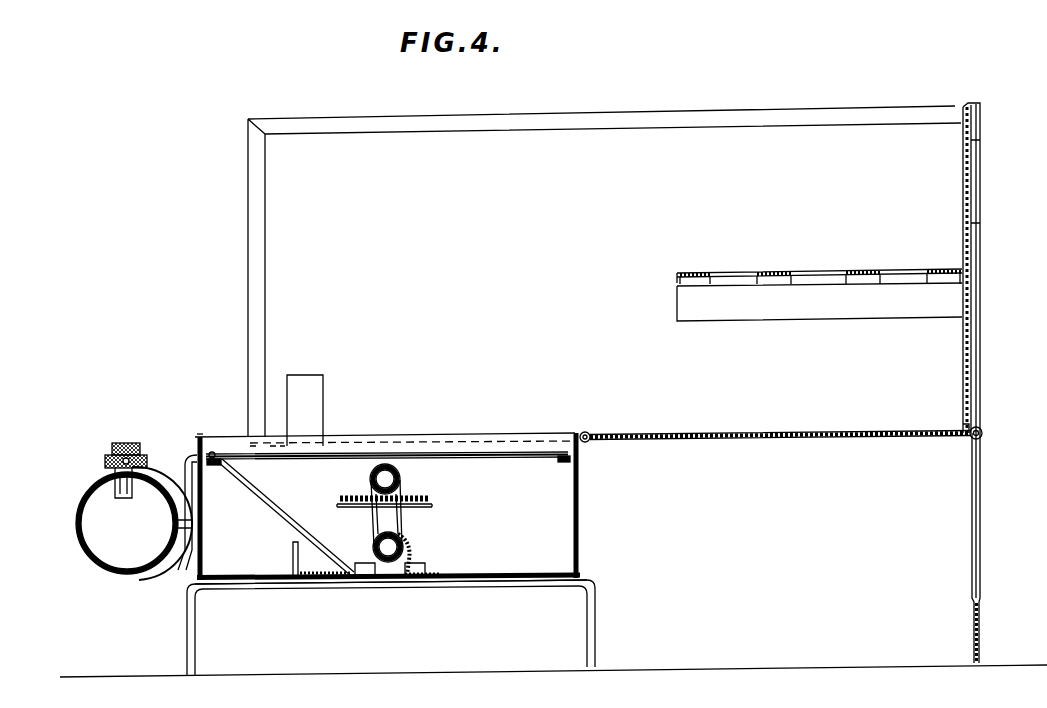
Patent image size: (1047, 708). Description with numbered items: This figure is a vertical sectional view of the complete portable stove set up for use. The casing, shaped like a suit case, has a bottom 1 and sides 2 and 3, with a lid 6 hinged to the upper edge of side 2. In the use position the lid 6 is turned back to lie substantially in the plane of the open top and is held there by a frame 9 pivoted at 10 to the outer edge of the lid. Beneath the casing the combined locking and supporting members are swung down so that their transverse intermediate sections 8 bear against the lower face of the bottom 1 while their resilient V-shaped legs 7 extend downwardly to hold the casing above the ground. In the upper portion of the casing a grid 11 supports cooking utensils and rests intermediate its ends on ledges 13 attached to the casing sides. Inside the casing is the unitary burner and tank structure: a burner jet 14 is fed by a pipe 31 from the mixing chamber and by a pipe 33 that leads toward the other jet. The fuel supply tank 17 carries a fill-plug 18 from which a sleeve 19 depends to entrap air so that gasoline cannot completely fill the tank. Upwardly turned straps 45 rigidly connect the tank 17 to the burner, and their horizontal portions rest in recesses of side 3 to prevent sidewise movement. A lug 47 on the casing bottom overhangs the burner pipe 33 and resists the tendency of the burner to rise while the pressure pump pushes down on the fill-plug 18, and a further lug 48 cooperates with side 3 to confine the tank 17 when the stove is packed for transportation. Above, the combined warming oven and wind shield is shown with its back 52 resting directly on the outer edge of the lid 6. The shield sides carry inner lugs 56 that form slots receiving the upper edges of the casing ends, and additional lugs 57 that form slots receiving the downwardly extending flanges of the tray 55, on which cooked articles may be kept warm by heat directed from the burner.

The bottom 1 is at (527, 575).
The side 2 is at (583, 545).
The side 3 is at (185, 580).
The lid 6 is at (738, 443).
The V-shaped legs 7 is at (612, 619).
The transverse intermediate section 8 is at (496, 585).
The frame 9 is at (970, 588).
The pivot 10 is at (984, 433).
The grid 11 is at (513, 451).
The ledges 13 is at (565, 462).
The burner jet 14 is at (432, 500).
The fuel supply tank 17 is at (78, 540).
The fill-plug 18 is at (108, 447).
The sleeve 19 is at (118, 490).
The pipe 31 is at (400, 479).
The pipe 33 is at (378, 548).
The straps 45 is at (280, 508).
The lug 47 is at (412, 550).
The lug 48 is at (290, 557).
The back 52 is at (978, 180).
The tray 55 is at (677, 275).
The lugs 56 is at (318, 410).
The lugs 57 is at (682, 306).